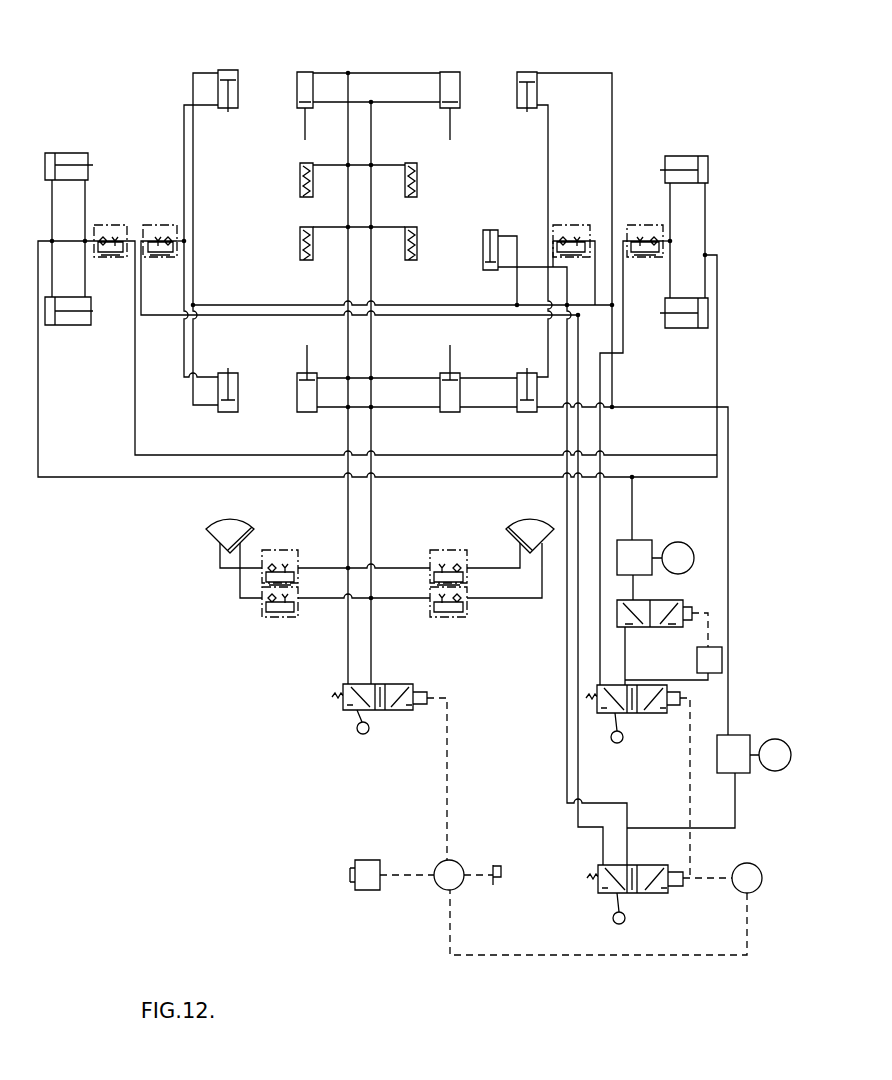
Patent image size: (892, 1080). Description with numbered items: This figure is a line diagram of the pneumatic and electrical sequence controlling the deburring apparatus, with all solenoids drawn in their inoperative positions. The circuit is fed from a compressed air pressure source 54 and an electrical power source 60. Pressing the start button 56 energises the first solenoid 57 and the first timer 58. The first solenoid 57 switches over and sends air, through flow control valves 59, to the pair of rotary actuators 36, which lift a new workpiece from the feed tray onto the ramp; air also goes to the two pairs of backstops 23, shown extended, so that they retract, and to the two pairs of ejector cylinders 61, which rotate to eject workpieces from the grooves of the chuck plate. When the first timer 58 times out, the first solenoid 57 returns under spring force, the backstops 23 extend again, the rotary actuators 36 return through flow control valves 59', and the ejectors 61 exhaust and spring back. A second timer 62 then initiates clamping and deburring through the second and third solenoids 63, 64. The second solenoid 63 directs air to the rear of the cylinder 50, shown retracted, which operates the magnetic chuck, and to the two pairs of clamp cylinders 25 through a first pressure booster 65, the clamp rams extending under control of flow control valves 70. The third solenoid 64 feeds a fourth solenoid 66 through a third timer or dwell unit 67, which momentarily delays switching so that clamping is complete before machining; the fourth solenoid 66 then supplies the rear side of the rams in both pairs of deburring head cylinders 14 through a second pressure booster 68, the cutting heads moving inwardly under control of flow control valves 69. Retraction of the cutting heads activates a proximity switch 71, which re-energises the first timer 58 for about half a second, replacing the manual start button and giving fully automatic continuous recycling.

The deburring head cylinders 14 is at (67, 153).
The backstops 23 is at (305, 75).
The clamp cylinders 25 is at (228, 70).
The rotary actuators 36 is at (233, 524).
The cylinder 50 is at (483, 246).
The pressure source 54 is at (357, 732).
The start button 56 is at (503, 883).
The first solenoid 57 is at (426, 690).
The first timer 58 is at (460, 866).
The flow control valves 59 is at (364, 617).
The flow control valves 59' is at (371, 550).
The power source 60 is at (510, 958).
The ejectors 61 is at (300, 180).
The second timer 62 is at (752, 869).
The second solenoid 63 is at (670, 901).
The third solenoid 64 is at (655, 724).
The first pressure booster 65 is at (745, 739).
The fourth solenoid 66 is at (665, 635).
The third timer or dwell unit 67 is at (722, 662).
The second pressure booster 68 is at (643, 543).
The flow control valves 69 is at (110, 225).
The flow control valves 70 is at (160, 225).
The proximity switch 71 is at (362, 890).